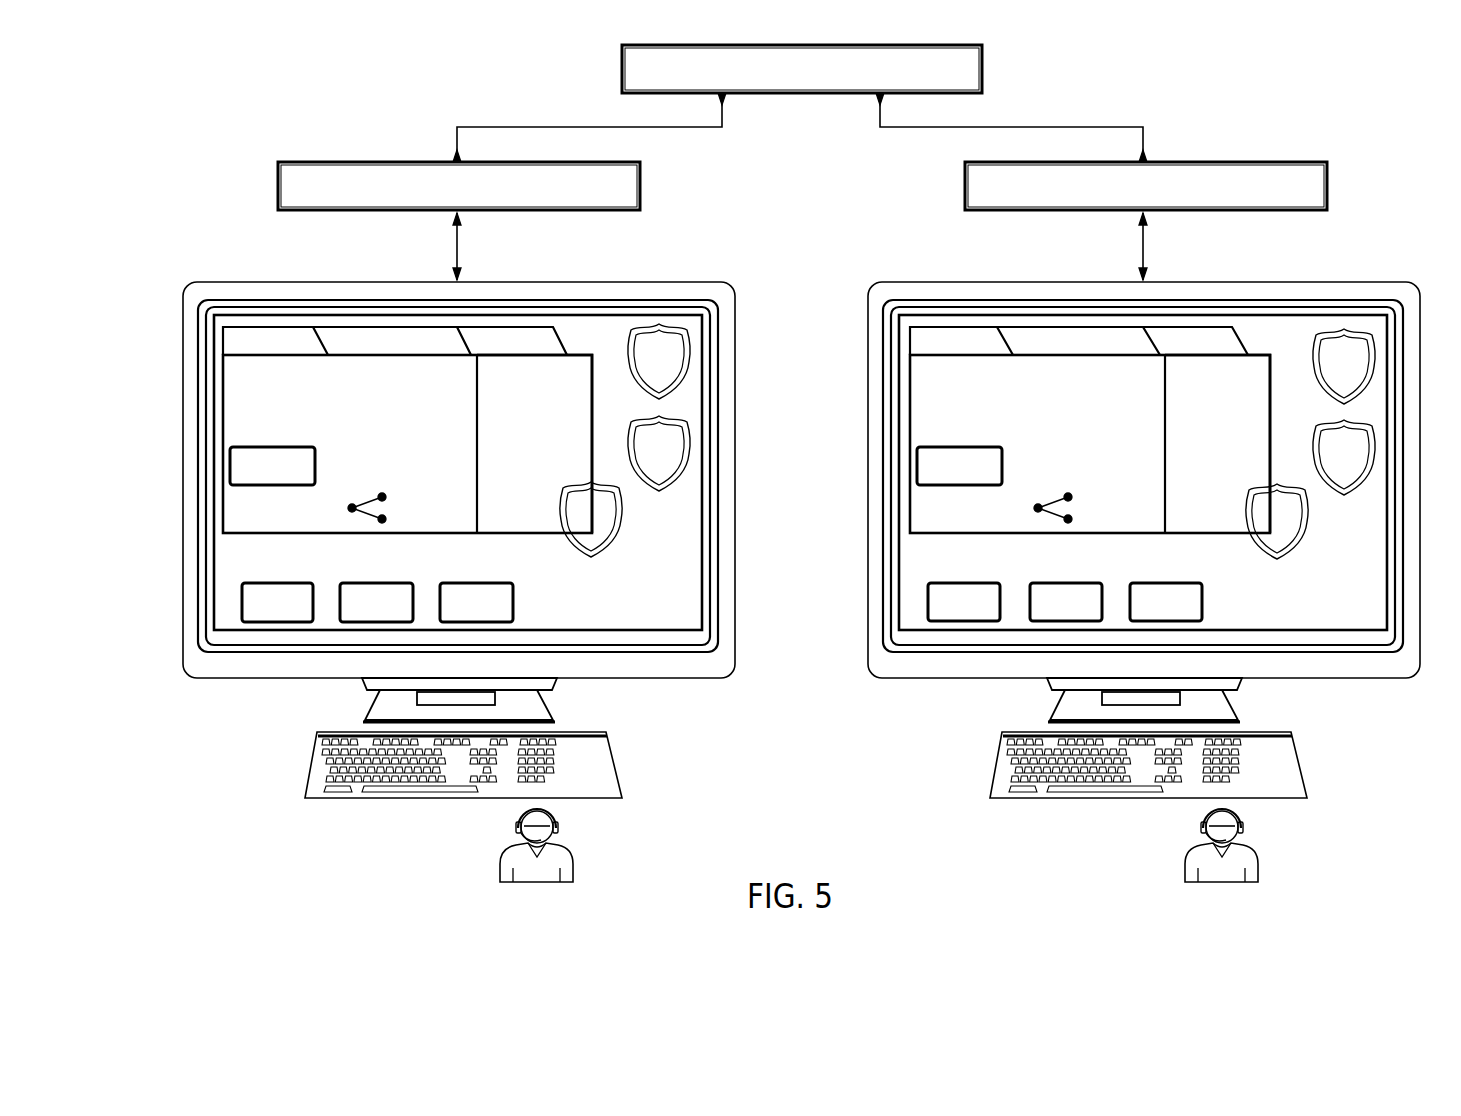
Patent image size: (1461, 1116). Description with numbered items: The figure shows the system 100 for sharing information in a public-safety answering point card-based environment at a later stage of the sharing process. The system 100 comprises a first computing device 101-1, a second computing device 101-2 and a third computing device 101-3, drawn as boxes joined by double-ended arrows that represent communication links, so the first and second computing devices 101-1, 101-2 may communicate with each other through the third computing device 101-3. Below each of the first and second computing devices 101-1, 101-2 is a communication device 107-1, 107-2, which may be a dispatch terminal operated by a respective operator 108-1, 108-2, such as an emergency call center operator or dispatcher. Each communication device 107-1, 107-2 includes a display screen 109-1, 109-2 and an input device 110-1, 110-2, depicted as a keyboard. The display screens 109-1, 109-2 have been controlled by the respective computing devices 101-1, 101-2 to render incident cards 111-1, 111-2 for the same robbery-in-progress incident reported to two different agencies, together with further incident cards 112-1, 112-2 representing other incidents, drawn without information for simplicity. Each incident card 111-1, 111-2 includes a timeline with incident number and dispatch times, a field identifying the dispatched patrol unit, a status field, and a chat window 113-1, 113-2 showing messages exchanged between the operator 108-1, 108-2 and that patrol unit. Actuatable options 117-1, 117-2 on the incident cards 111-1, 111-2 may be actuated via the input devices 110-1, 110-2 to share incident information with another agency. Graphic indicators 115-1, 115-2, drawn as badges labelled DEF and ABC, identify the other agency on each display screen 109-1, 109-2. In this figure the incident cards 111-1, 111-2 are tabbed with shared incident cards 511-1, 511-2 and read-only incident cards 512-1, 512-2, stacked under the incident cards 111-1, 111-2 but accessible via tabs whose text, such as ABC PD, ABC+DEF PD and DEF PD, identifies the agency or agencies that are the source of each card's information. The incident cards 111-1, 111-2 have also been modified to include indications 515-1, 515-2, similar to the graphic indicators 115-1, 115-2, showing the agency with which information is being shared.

The system 100 is at (190, 70).
The first computing device 101-1 is at (278, 184).
The second computing device 101-2 is at (965, 185).
The third computing device 101-3 is at (622, 70).
The communication device 107-1 is at (697, 678).
The communication device 107-2 is at (1382, 678).
The operator 108-1 is at (508, 863).
The operator 108-2 is at (1193, 863).
The display screen 109-1 is at (233, 631).
The display screen 109-2 is at (918, 631).
The input device 110-1 is at (345, 800).
The input device 110-2 is at (1030, 800).
The incident card 111-1 is at (223, 431).
The incident card 111-2 is at (910, 431).
The incident card 112-1 is at (528, 601).
The incident card 112-2 is at (1212, 602).
The chat window 113-1 is at (580, 354).
The chat window 113-2 is at (1262, 354).
The graphic indicator 115-1 is at (664, 324).
The graphic indicator 115-2 is at (1348, 329).
The actuatable option 117-1 is at (348, 507).
The actuatable option 117-2 is at (1033, 507).
The shared incident card 511-1 is at (383, 327).
The shared incident card 511-2 is at (1070, 327).
The read-only incident card 512-1 is at (510, 327).
The read-only incident card 512-2 is at (1197, 327).
The indication 515-1 is at (612, 549).
The indication 515-2 is at (1299, 551).